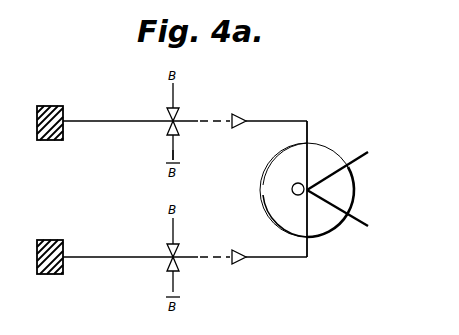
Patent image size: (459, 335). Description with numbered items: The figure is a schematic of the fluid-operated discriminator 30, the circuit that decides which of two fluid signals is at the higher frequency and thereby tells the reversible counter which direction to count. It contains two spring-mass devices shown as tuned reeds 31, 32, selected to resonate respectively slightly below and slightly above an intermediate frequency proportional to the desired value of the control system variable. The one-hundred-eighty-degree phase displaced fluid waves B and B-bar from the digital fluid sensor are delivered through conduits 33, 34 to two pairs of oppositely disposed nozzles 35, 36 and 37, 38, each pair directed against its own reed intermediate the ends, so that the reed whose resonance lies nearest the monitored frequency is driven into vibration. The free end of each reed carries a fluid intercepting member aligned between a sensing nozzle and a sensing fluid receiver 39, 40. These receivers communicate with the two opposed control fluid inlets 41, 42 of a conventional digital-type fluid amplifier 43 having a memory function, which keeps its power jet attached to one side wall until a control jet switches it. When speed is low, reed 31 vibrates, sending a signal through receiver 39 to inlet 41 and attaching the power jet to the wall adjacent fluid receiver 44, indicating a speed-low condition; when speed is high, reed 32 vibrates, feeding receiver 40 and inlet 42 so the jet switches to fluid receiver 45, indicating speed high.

The fluid-operated discriminator 30 is at (242, 181).
The tuned reed 31 is at (92, 121).
The tuned reed 32 is at (93, 258).
The conduit 33 is at (176, 90).
The conduit 34 is at (171, 150).
The nozzle 35 is at (167, 110).
The nozzle 36 is at (178, 130).
The nozzle 37 is at (167, 246).
The nozzle 38 is at (178, 266).
The sensing fluid receiver 39 is at (244, 119).
The sensing fluid receiver 40 is at (243, 262).
The control fluid inlet 41 is at (313, 151).
The control fluid inlet 42 is at (313, 228).
The digital-type fluid amplifier 43 is at (376, 189).
The fluid receiver 44 is at (355, 221).
The fluid receiver 45 is at (363, 158).